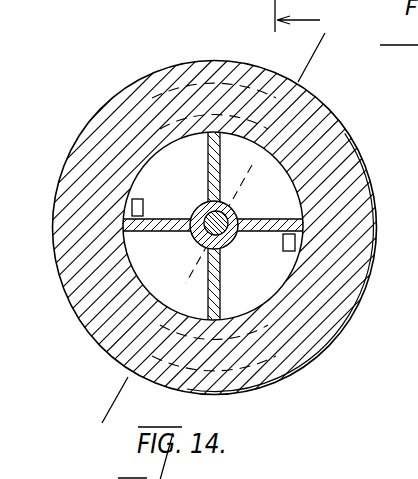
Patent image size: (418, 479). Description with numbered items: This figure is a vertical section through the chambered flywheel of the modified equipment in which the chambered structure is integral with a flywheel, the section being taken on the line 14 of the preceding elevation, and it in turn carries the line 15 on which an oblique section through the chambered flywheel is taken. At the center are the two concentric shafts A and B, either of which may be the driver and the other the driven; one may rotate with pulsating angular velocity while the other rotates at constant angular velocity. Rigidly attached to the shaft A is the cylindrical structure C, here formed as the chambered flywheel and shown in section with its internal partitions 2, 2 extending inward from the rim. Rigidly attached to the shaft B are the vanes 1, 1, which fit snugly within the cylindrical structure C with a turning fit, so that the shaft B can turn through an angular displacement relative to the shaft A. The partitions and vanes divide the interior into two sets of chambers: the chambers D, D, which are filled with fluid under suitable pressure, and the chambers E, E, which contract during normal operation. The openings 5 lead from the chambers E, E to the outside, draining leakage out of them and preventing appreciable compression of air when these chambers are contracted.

The vanes 1 is at (208, 300).
The internal partitions 2 is at (275, 223).
The openings 5 is at (285, 252).
The section line 14 is at (314, 16).
The section line 15 is at (115, 387).
The shaft A is at (190, 235).
The shaft B is at (228, 242).
The cylindrical structure C is at (293, 321).
The chambers D is at (206, 226).
The chambers E is at (213, 226).